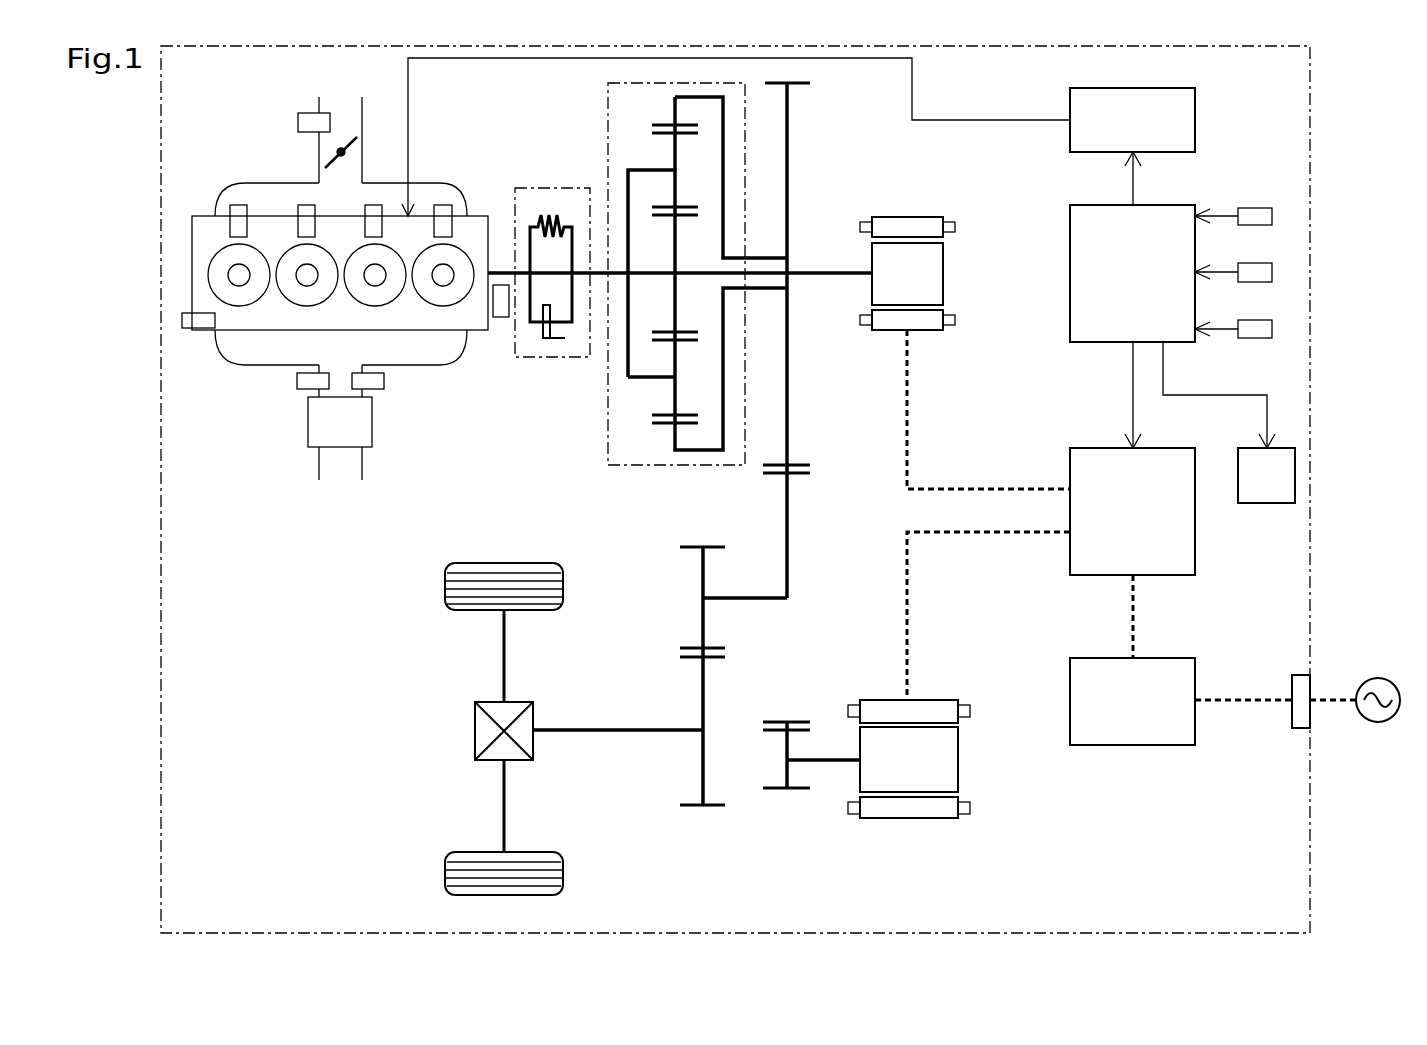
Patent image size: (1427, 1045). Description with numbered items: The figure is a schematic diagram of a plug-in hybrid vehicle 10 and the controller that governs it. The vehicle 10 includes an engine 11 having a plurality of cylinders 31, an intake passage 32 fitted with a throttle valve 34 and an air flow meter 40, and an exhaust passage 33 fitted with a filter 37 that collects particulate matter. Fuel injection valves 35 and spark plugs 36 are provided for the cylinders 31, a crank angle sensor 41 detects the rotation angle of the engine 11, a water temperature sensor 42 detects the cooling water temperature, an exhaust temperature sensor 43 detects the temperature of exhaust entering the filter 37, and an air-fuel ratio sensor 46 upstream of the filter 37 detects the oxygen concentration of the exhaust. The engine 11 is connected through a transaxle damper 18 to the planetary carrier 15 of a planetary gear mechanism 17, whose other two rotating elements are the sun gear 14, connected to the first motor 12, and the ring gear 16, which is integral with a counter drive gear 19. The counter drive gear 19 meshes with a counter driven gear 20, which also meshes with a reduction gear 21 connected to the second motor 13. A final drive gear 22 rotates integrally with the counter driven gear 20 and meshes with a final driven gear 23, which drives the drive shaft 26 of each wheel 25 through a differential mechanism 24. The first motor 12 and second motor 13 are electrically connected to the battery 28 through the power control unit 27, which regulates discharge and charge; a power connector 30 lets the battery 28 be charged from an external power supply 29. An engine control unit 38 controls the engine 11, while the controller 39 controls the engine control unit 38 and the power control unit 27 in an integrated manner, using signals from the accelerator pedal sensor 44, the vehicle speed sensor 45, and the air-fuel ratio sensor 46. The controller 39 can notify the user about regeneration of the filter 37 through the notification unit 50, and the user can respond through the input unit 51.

The hybrid vehicle 10 is at (1310, 112).
The engine 11 is at (192, 266).
The first motor 12 is at (943, 275).
The second motor 13 is at (958, 757).
The sun gear 14 is at (675, 300).
The planetary carrier 15 is at (645, 170).
The ring gear 16 is at (675, 436).
The planetary gear mechanism 17 is at (608, 112).
The transaxle damper 18 is at (550, 357).
The counter drive gear 19 is at (787, 432).
The counter driven gear 20 is at (787, 500).
The reduction gear 21 is at (787, 740).
The final drive gear 22 is at (700, 560).
The final driven gear 23 is at (700, 672).
The differential mechanism 24 is at (475, 731).
The wheel 25 is at (445, 584).
The drive shaft 26 is at (504, 650).
The power control unit 27 is at (1070, 462).
The battery 28 is at (1070, 680).
The external power supply 29 is at (1378, 722).
The power connector 30 is at (1300, 675).
The cylinders 31 is at (248, 304).
The intake passage 32 is at (383, 122).
The exhaust passage 33 is at (362, 465).
The throttle valve 34 is at (330, 160).
The fuel injection valves 35 is at (298, 222).
The spark plugs 36 is at (302, 287).
The filter 37 is at (308, 422).
The engine control unit 38 is at (1195, 118).
The controller 39 is at (1070, 225).
The air flow meter 40 is at (298, 122).
The crank angle sensor 41 is at (499, 317).
The water temperature sensor 42 is at (182, 321).
The exhaust temperature sensor 43 is at (384, 381).
The accelerator pedal sensor 44 is at (1272, 216).
The vehicle speed sensor 45 is at (1272, 272).
The air-fuel ratio sensor 46 is at (297, 381).
The notification unit 50 is at (1252, 448).
The input unit 51 is at (1272, 329).